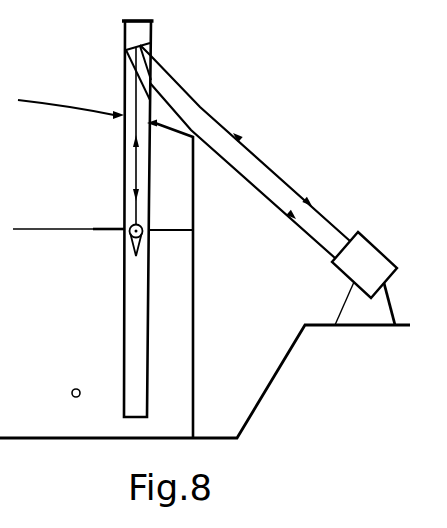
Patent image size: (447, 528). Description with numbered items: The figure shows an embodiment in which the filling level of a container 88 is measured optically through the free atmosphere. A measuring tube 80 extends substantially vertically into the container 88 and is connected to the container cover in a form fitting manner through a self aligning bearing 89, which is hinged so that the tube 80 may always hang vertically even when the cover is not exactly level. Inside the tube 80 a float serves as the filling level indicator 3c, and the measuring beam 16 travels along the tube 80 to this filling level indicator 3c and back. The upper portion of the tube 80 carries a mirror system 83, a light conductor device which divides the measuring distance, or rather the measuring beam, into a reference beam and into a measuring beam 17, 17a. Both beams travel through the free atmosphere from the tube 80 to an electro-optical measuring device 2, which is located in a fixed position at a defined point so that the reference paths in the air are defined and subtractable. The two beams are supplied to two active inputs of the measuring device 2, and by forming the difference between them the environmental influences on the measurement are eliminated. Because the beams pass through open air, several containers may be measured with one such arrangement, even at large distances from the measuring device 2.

The measuring device 2 is at (353, 268).
The filling level indicator 3c is at (129, 245).
The measuring beam 16 is at (252, 150).
The measuring beam 17 is at (293, 186).
The measuring beam 17a is at (282, 208).
The measuring tube 80 is at (124, 322).
The mirror system 83 is at (150, 43).
The container 88 is at (76, 388).
The self aligning bearing 89 is at (113, 121).